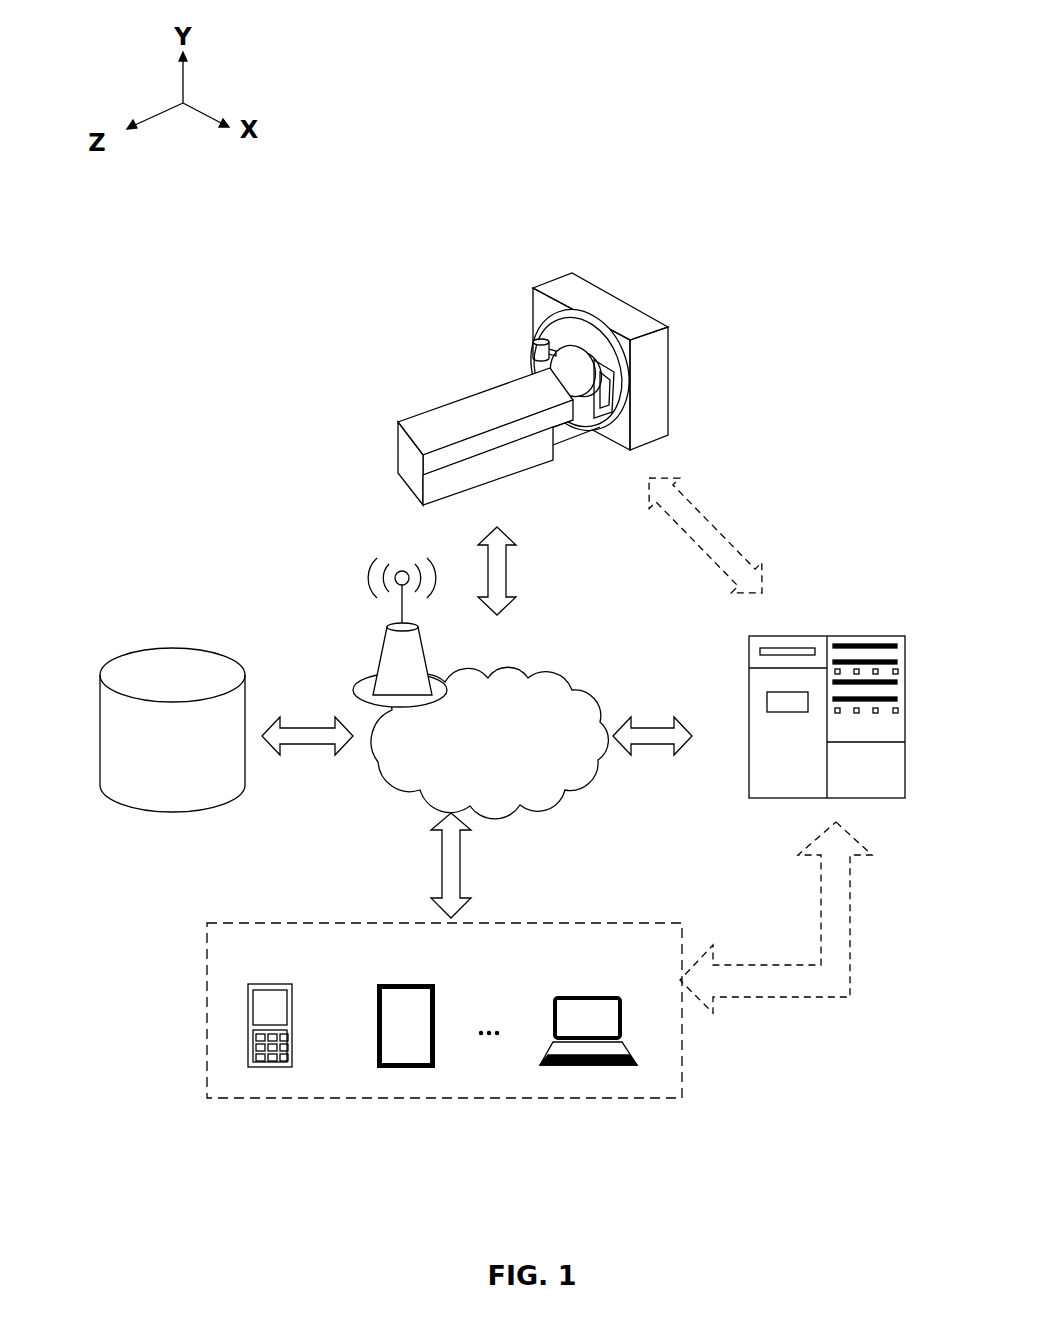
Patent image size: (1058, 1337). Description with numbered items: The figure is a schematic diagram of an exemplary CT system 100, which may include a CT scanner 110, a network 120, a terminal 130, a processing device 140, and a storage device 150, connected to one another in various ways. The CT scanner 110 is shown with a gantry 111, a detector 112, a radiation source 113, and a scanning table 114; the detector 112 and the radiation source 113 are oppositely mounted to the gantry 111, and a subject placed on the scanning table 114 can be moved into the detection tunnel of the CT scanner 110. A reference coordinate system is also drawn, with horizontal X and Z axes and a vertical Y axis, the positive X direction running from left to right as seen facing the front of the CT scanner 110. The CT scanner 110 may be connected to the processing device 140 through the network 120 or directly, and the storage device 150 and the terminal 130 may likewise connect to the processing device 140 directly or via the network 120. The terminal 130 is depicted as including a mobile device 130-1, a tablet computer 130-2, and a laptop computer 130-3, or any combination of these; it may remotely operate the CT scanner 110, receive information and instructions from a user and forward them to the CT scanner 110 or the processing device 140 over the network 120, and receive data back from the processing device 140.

The CT system 100 is at (864, 142).
The CT scanner 110 is at (447, 298).
The gantry 111 is at (598, 302).
The detector 112 is at (616, 386).
The radiation source 113 is at (533, 347).
The scanning table 114 is at (468, 408).
The network 120 is at (577, 693).
The terminal 130 is at (273, 923).
The mobile device 130-1 is at (260, 983).
The tablet computer 130-2 is at (398, 983).
The laptop computer 130-3 is at (580, 988).
The processing device 140 is at (767, 635).
The storage device 150 is at (183, 650).